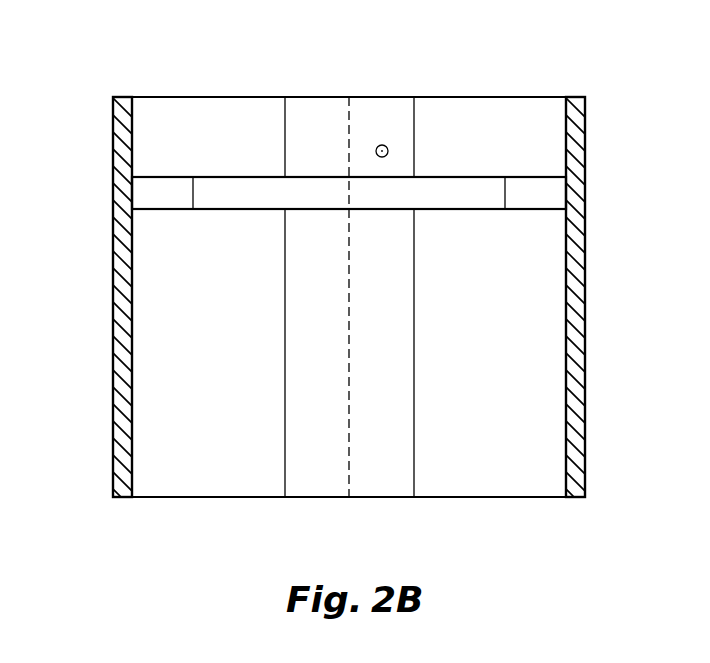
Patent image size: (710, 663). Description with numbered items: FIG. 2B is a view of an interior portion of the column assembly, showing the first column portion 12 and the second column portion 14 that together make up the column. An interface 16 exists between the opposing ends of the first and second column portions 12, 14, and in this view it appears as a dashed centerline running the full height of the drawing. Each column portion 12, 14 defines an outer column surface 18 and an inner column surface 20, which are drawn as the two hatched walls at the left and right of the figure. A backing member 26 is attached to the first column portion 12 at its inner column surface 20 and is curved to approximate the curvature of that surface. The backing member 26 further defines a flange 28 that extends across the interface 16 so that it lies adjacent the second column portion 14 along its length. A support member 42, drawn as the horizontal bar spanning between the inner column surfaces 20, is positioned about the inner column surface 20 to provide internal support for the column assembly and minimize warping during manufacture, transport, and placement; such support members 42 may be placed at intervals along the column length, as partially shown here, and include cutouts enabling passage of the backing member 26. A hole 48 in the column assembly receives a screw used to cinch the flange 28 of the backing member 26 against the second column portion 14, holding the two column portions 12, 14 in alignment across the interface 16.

The first column portion 12 is at (172, 393).
The second column portion 14 is at (515, 410).
The interface 16 is at (348, 137).
The outer column surface 18 is at (113, 228).
The inner column surface 20 is at (568, 272).
The backing member 26 is at (281, 351).
The flange 28 is at (396, 382).
The support member 42 is at (467, 214).
The hole 48 is at (388, 151).